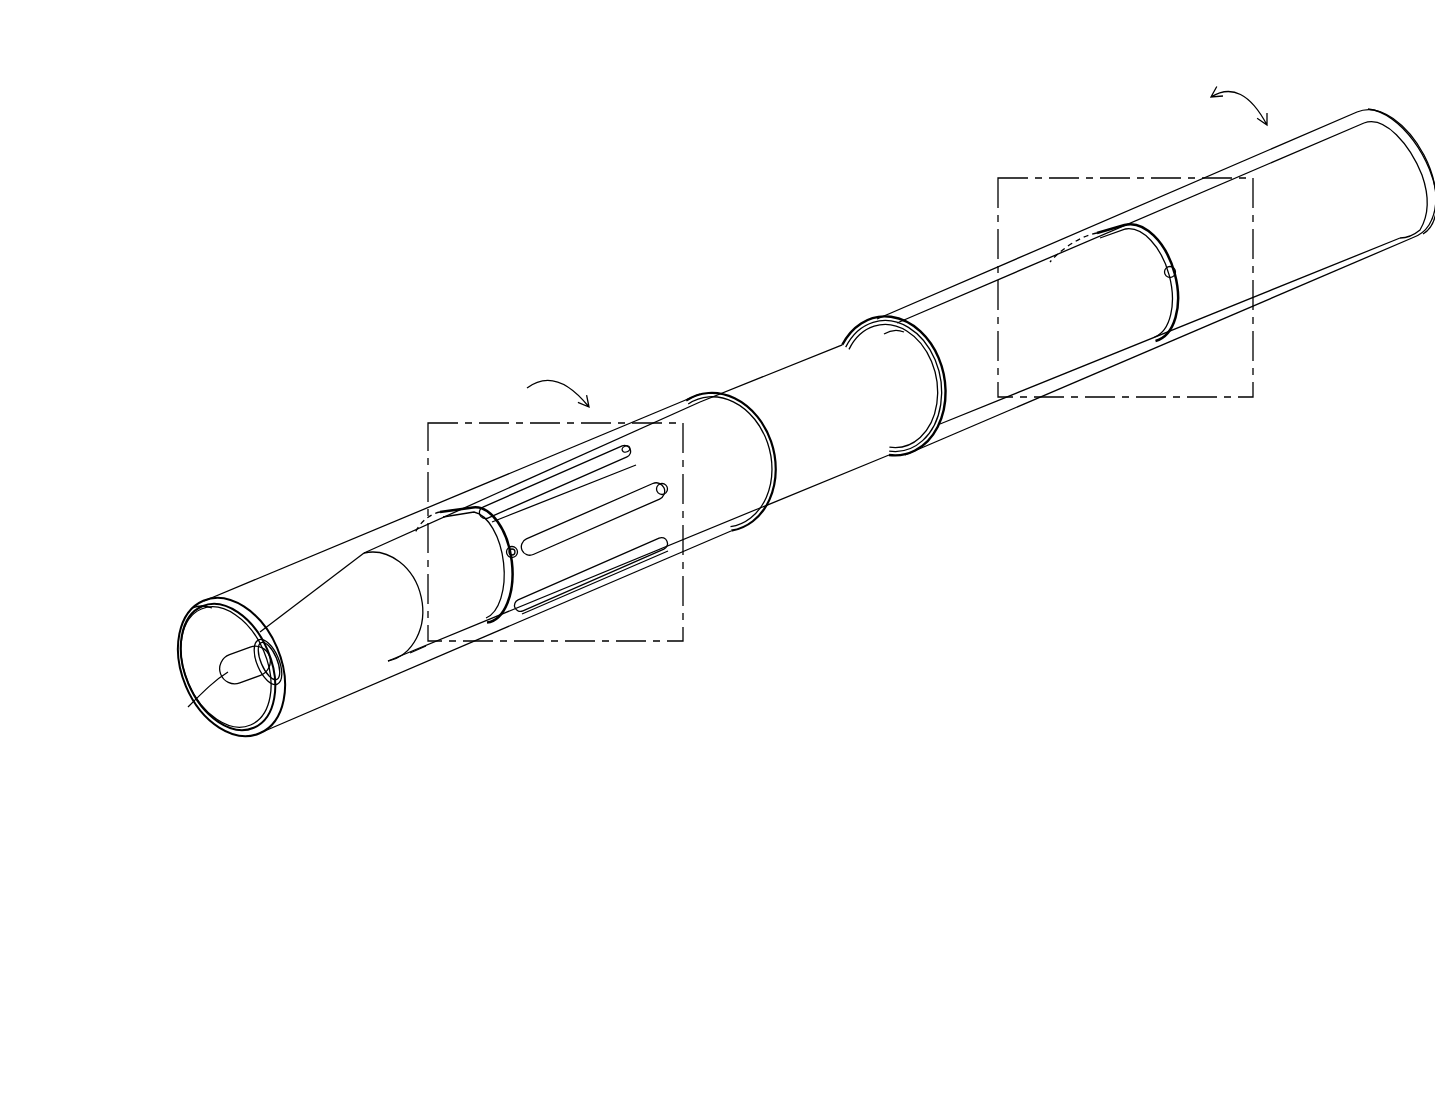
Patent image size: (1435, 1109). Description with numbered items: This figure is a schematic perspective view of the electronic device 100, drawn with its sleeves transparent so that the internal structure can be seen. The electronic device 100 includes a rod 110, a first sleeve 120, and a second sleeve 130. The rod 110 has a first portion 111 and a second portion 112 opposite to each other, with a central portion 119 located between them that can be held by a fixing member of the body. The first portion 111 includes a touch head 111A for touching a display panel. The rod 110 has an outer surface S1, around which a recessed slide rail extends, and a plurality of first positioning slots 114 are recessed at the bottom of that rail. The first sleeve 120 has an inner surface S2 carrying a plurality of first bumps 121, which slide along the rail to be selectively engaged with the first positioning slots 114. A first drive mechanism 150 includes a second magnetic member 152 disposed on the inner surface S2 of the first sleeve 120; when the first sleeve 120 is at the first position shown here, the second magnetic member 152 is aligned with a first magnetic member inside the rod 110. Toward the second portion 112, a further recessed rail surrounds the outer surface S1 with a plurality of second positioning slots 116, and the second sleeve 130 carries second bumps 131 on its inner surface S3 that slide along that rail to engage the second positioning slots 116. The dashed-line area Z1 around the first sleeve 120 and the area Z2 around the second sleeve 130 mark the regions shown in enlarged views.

The electronic device 100 is at (1392, 802).
The rod 110 is at (787, 450).
The first portion 111 is at (529, 589).
The touch head 111A is at (240, 660).
The second portion 112 is at (1337, 258).
The first positioning slots 114 is at (506, 568).
The second positioning slots 116 is at (1177, 272).
The central portion 119 is at (822, 458).
The first sleeve 120 is at (300, 718).
The first bumps 121 is at (520, 549).
The second sleeve 130 is at (990, 418).
The second bumps 131 is at (1173, 272).
The first drive mechanism 150 is at (326, 394).
The second magnetic member 152 is at (505, 530).
The outer surface S1 is at (424, 665).
The inner surface S2 is at (199, 624).
The inner surface S3 is at (887, 350).
The area Z1 is at (683, 610).
The area Z2 is at (1253, 380).